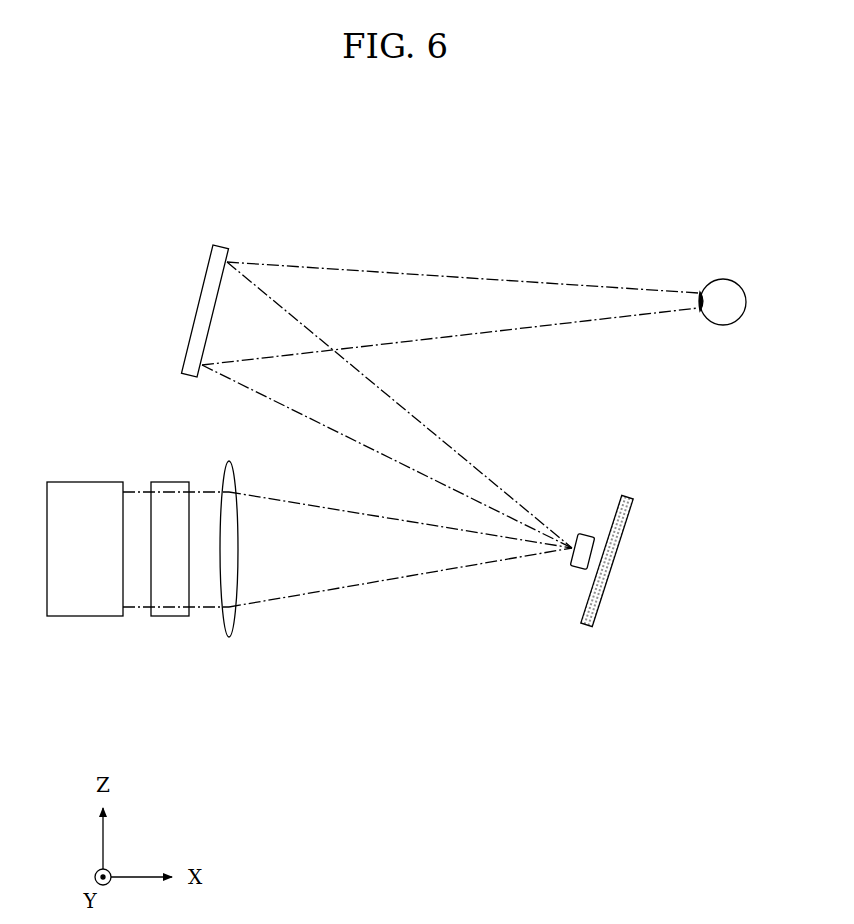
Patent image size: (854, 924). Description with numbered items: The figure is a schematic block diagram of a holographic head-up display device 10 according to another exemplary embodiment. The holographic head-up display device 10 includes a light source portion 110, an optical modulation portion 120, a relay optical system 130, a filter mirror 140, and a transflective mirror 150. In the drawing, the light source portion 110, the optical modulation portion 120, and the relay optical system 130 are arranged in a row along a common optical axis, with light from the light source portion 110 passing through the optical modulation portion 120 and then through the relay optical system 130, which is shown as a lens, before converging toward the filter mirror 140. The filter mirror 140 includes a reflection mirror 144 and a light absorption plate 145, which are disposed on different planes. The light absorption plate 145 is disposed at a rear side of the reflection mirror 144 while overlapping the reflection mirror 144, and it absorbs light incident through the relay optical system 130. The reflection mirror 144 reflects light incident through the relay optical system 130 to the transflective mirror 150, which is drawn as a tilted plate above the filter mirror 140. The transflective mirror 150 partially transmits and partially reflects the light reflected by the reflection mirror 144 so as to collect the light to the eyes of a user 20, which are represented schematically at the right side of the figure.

The holographic head-up display device 10 is at (131, 228).
The user 20 is at (723, 326).
The light source portion 110 is at (87, 617).
The optical modulation portion 120 is at (173, 617).
The relay optical system 130 is at (230, 638).
The filter mirror 140 is at (570, 617).
The reflection mirror 144 is at (574, 571).
The light absorption plate 145 is at (599, 594).
The transflective mirror 150 is at (188, 378).